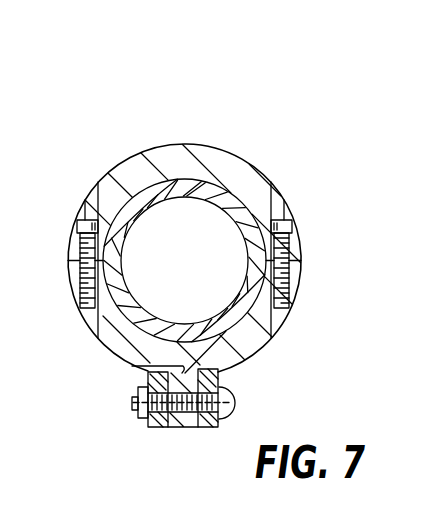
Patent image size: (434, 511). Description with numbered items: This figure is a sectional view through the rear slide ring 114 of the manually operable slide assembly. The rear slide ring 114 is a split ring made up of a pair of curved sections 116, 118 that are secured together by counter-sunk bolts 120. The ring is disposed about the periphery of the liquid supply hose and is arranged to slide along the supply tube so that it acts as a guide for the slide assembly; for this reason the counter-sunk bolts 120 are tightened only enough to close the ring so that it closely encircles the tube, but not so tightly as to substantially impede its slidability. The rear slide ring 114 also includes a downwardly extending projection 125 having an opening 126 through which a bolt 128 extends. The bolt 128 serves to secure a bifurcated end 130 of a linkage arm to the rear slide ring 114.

The rear slide ring 114 is at (199, 143).
The curved section 116 is at (238, 163).
The curved section 118 is at (244, 350).
The counter-sunk bolts 120 is at (87, 220).
The downwardly extending projection 125 is at (132, 366).
The opening 126 is at (190, 414).
The bolt 128 is at (208, 398).
The bifurcated end 130 is at (150, 422).